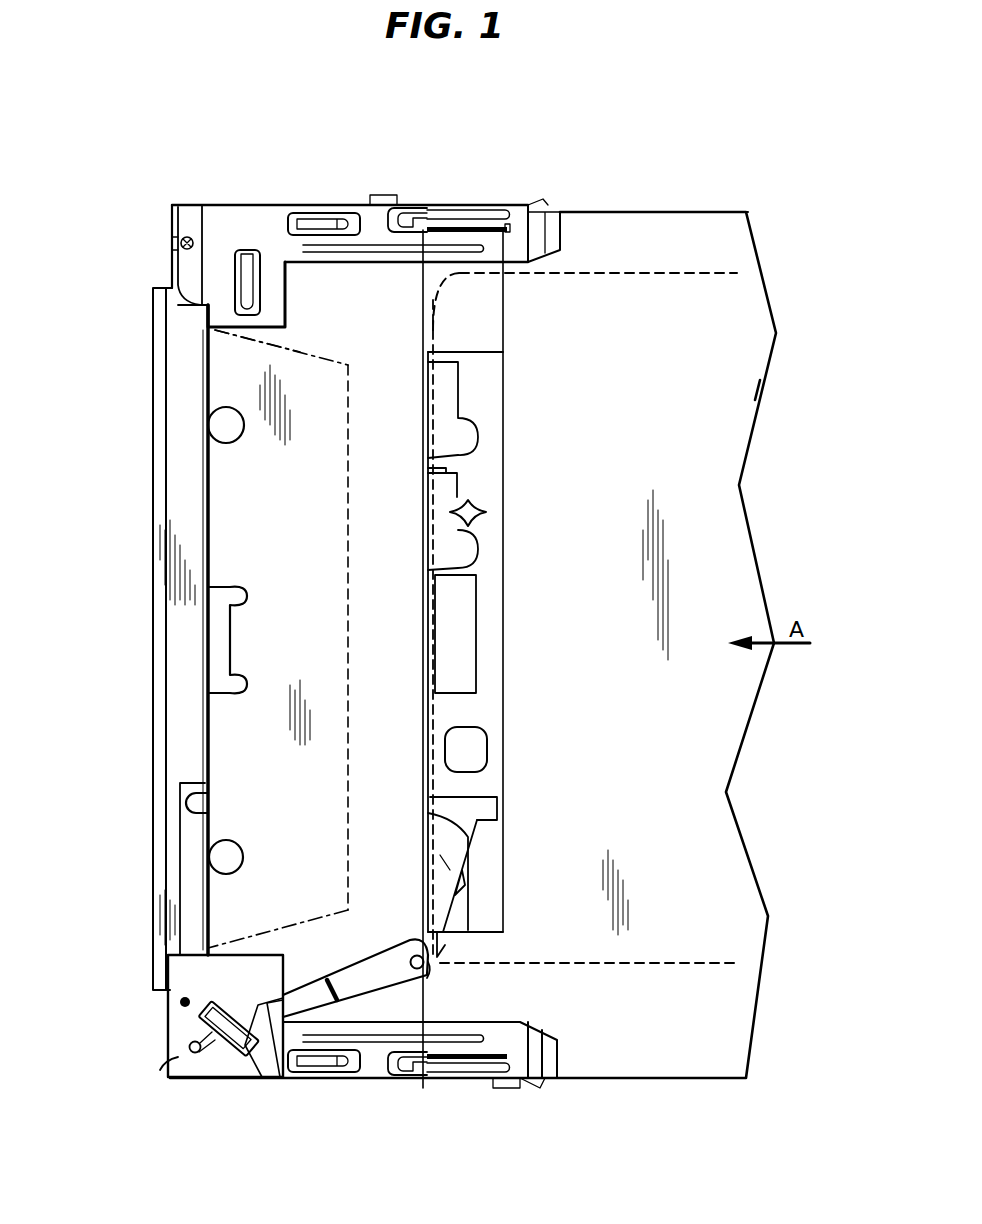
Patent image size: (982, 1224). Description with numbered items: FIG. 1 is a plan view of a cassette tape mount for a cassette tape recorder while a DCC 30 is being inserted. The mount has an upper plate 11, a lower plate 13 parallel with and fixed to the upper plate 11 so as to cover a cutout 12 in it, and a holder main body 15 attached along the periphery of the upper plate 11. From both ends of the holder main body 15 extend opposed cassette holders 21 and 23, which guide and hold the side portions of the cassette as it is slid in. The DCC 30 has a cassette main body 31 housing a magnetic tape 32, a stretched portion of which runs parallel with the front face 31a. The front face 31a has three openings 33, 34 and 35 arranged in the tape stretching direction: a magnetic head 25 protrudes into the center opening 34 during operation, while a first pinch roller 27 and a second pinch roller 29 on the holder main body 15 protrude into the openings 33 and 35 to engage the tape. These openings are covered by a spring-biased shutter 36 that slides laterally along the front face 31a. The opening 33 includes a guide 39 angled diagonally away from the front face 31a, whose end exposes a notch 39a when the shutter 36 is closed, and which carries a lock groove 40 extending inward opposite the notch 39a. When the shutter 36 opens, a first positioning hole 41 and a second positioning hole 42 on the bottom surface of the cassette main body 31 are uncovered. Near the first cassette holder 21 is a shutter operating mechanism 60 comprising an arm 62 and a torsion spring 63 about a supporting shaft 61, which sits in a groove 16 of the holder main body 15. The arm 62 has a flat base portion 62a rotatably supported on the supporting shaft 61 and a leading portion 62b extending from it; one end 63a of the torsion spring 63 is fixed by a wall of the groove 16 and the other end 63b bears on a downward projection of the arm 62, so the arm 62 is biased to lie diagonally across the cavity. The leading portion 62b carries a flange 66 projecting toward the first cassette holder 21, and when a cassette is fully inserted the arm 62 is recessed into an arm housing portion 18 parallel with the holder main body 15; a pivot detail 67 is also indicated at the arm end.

The upper plate 11 is at (335, 282).
The cutout 12 is at (320, 360).
The lower plate 13 is at (222, 503).
The holder main body 15 is at (192, 645).
The groove 16 is at (178, 1020).
The arm housing portion 18 is at (192, 855).
The first cassette holder 21 is at (372, 1060).
The second cassette holder 23 is at (252, 205).
The magnetic head 25 is at (234, 643).
The first pinch roller 27 is at (228, 846).
The second pinch roller 29 is at (228, 428).
The DCC 30 is at (623, 212).
The cassette main body 31 is at (730, 396).
The front face 31a is at (434, 757).
The magnetic tape 32 is at (432, 530).
The opening 33 is at (434, 845).
The opening 34 is at (456, 630).
The opening 35 is at (448, 408).
The shutter 36 is at (488, 597).
The guide 39 is at (462, 888).
The notch 39a is at (440, 948).
The lock groove 40 is at (482, 806).
The first positioning hole 41 is at (478, 745).
The second positioning hole 42 is at (480, 503).
The shutter operating mechanism 60 is at (334, 945).
The supporting shaft 61 is at (198, 1052).
The arm 62 is at (386, 970).
The base portion 62a is at (258, 1072).
The leading portion 62b is at (358, 995).
The torsion spring 63 is at (178, 1040).
The end of torsion spring 63a is at (180, 1000).
The another end of torsion spring 63b is at (206, 1080).
The flange 66 is at (426, 966).
The hinge 67 is at (426, 966).